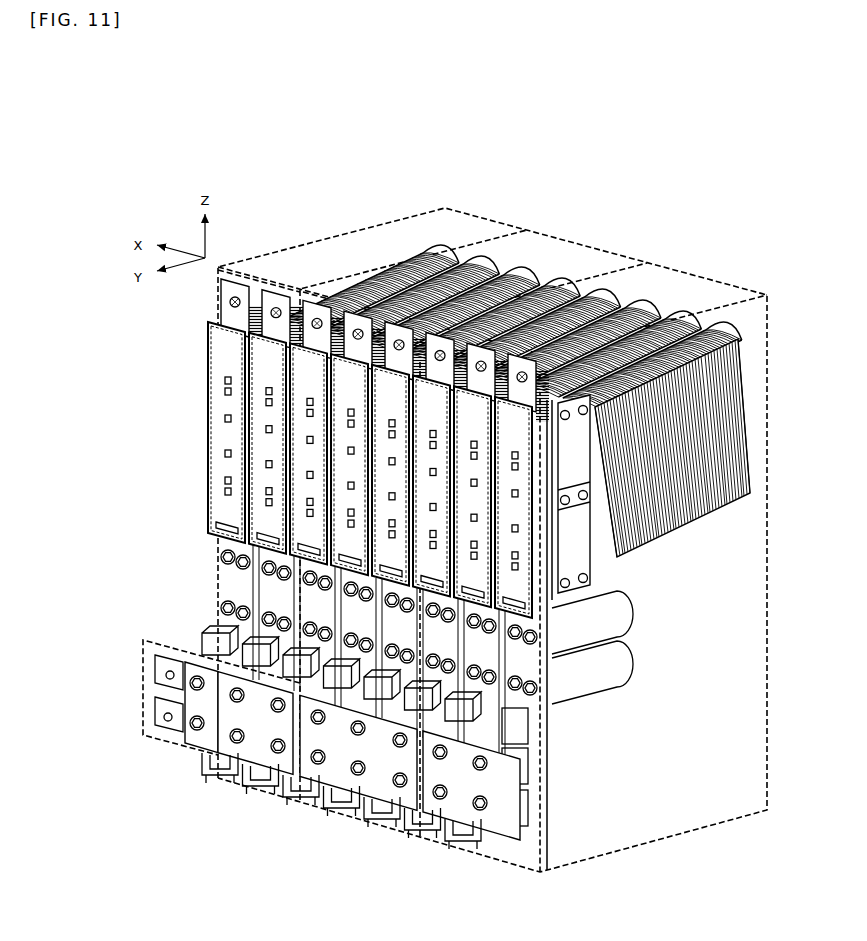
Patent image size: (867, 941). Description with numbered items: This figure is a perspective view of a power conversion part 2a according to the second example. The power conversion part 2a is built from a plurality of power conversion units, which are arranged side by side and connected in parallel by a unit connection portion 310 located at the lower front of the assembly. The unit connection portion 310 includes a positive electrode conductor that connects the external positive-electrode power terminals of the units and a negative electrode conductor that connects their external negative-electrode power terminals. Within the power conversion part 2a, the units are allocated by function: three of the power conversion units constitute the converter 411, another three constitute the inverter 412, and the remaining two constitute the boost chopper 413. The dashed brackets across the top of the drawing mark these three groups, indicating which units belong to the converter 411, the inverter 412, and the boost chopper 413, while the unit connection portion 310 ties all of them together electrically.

The power conversion part 2a is at (268, 157).
The converter 411 is at (654, 212).
The inverter 412 is at (534, 179).
The boost chopper 413 is at (459, 159).
The unit connection portion 310 is at (178, 648).